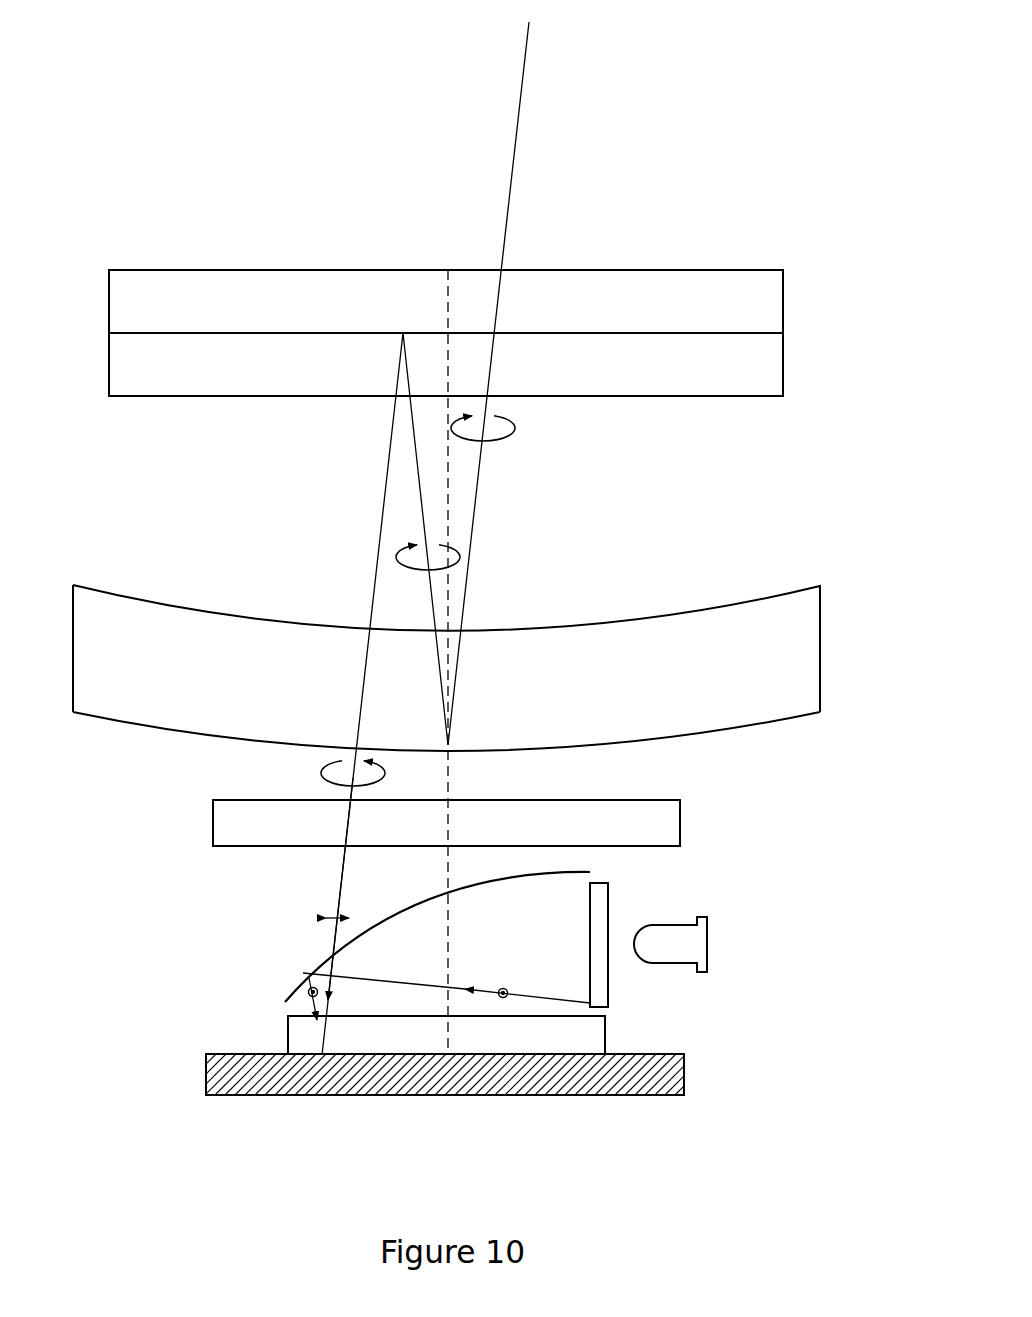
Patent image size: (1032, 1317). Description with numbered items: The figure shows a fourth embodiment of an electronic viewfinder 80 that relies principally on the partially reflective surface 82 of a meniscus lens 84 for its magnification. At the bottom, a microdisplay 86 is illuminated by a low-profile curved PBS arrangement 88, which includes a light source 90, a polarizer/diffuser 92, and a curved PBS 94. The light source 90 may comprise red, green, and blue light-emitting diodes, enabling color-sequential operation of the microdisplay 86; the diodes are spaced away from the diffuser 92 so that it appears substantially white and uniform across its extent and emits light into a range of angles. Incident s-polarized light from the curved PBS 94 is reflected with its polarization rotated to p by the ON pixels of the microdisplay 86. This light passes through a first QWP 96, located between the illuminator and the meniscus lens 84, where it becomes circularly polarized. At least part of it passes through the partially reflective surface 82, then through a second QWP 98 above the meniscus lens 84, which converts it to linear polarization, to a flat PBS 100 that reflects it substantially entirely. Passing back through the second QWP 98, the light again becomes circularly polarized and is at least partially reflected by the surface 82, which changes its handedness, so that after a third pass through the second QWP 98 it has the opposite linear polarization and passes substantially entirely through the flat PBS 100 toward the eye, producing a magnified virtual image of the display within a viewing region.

The electronic viewfinder 80 is at (97, 208).
The partially reflective surface 82 is at (677, 733).
The meniscus lens 84 is at (792, 658).
The microdisplay 86 is at (590, 1037).
The curved PBS arrangement 88 is at (270, 934).
The light source 90 is at (690, 949).
The polarizer/diffuser 92 is at (600, 898).
The curved PBS 94 is at (293, 988).
The first QWP 96 is at (240, 827).
The second QWP 98 is at (735, 371).
The flat PBS 100 is at (750, 297).